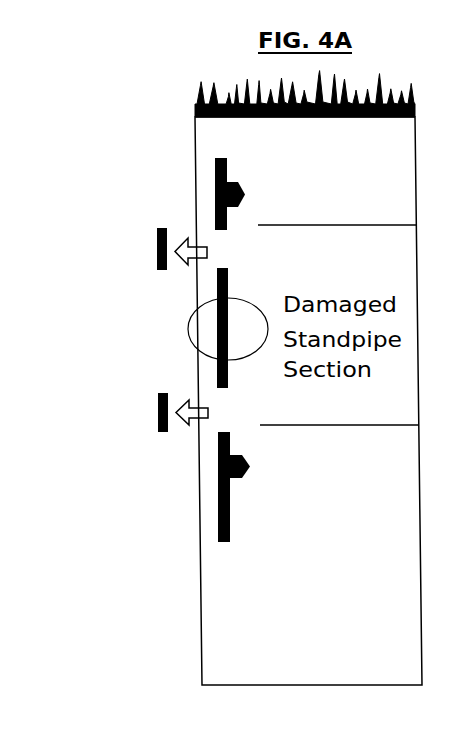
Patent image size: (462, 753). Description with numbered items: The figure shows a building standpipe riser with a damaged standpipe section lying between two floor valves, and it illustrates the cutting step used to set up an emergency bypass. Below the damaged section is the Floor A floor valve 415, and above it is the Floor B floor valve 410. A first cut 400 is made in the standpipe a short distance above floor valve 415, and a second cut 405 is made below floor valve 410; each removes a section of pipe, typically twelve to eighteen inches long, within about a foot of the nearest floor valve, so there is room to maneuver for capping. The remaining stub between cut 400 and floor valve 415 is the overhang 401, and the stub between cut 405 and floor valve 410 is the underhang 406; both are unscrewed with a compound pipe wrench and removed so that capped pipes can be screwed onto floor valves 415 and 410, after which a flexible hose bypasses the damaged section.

The cut 400 is at (146, 427).
The overhang section 401 is at (213, 442).
The cut 405 is at (142, 265).
The underhang section 406 is at (207, 219).
The floor valve 410 is at (302, 194).
The floor valve 415 is at (310, 487).